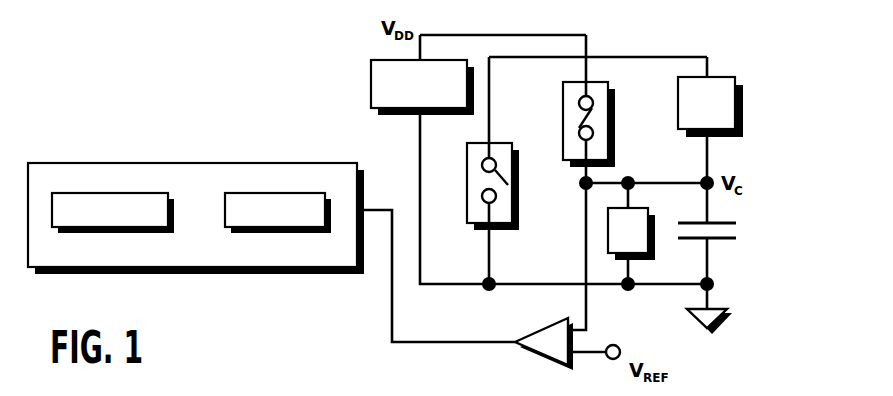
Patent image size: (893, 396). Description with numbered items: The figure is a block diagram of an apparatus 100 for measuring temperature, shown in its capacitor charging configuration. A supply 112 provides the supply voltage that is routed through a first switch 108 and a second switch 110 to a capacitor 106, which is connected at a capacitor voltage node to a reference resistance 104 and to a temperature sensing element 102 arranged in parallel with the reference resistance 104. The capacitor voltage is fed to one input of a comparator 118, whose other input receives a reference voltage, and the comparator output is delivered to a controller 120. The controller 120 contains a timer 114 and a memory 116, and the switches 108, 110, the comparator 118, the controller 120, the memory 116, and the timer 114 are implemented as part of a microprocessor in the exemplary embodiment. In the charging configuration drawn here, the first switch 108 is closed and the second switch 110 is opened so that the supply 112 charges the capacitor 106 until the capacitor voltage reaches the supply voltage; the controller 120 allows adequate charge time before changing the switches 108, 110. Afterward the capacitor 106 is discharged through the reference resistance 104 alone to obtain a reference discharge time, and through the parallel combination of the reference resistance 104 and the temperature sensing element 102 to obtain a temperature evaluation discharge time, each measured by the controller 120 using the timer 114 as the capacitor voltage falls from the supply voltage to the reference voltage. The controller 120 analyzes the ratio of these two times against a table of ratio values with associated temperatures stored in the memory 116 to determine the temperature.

The apparatus 100 is at (172, 92).
The temperature sensing element 102 is at (743, 90).
The reference resistance 104 is at (650, 218).
The capacitor 106 is at (723, 240).
The first switch 108 is at (610, 83).
The second switch 110 is at (502, 142).
The supply 112 is at (370, 82).
The timer 114 is at (269, 193).
The memory 116 is at (107, 193).
The comparator 118 is at (540, 327).
The controller 120 is at (267, 273).